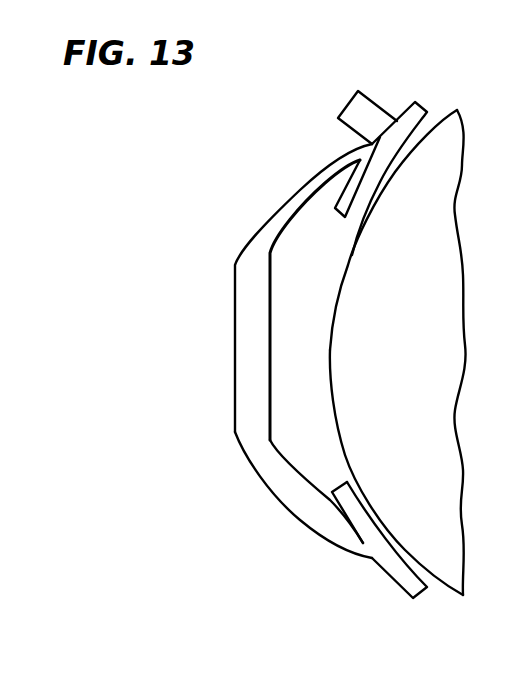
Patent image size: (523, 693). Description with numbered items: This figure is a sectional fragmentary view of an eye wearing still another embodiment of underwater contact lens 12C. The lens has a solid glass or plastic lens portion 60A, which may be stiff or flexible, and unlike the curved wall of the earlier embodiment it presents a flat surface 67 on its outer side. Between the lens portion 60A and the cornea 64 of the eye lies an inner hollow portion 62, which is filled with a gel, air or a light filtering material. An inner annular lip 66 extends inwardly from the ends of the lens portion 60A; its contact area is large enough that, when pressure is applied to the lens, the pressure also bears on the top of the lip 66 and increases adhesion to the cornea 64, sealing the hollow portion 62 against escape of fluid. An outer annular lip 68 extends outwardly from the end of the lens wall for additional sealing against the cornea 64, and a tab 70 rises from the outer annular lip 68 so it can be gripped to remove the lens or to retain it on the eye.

The underwater contact lens 12C is at (386, 57).
The inner hollow portion 62 is at (310, 318).
The cornea 64 is at (333, 365).
The inner annular lip 66 is at (345, 198).
The flat surface 67 is at (235, 367).
The outer annular lip 68 is at (410, 118).
The lens portion 60A is at (258, 320).
The tab 70 is at (346, 107).